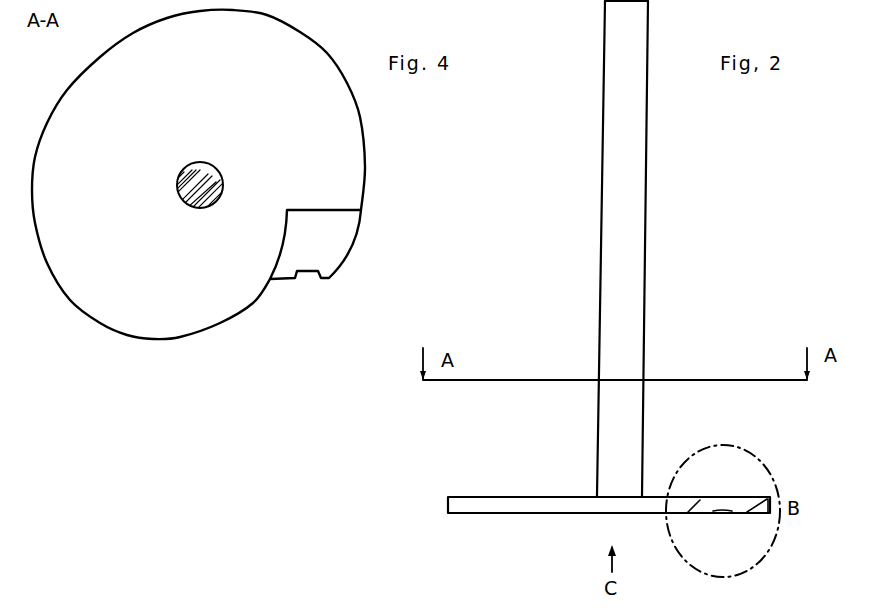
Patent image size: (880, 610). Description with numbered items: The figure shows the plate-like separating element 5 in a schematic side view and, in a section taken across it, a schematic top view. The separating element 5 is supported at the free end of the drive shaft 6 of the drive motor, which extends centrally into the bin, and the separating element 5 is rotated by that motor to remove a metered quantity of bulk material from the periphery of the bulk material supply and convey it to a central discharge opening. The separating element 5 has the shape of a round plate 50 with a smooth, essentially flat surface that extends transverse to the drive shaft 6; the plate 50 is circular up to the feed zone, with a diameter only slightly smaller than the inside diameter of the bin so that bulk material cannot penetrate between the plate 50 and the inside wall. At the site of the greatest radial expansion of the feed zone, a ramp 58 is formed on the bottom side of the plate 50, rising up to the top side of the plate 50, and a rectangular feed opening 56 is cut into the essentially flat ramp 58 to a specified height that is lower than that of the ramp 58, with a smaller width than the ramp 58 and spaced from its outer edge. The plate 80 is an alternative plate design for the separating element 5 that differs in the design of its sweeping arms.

In FIG. 4, the separating element 5 is at (366, 121).
In FIG. 2, the separating element 5 is at (497, 494).
In FIG. 4, the drive shaft 6 is at (207, 178).
In FIG. 2, the drive shaft 6 is at (645, 186).
In FIG. 4, the round plate 50 is at (300, 72).
In FIG. 2, the round plate 50 is at (547, 502).
In FIG. 4, the feed opening 56 is at (308, 279).
In FIG. 4, the ramp 58 is at (338, 237).
In FIG. 4, the plate 80 is at (219, 169).
In FIG. 2, the plate 80 is at (609, 553).